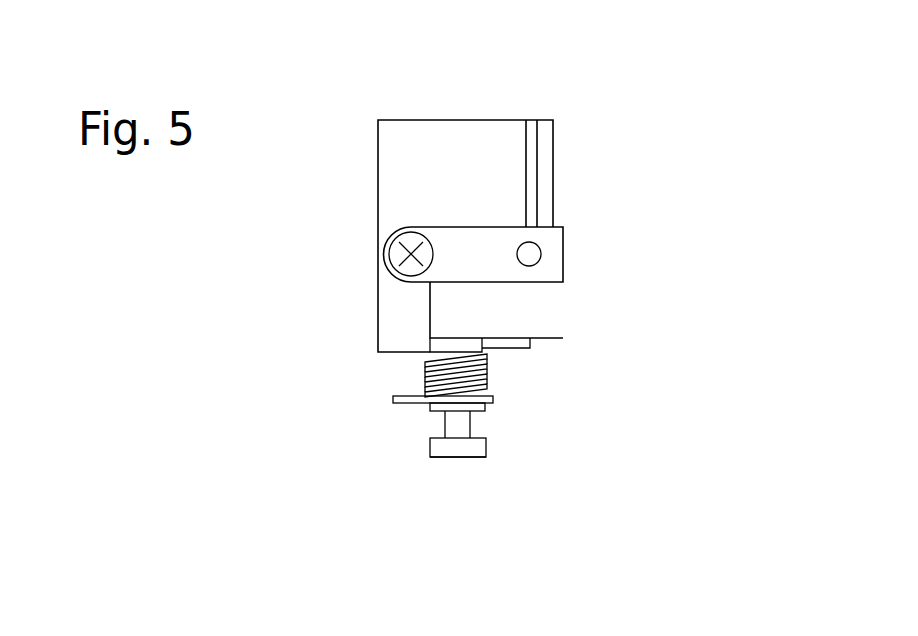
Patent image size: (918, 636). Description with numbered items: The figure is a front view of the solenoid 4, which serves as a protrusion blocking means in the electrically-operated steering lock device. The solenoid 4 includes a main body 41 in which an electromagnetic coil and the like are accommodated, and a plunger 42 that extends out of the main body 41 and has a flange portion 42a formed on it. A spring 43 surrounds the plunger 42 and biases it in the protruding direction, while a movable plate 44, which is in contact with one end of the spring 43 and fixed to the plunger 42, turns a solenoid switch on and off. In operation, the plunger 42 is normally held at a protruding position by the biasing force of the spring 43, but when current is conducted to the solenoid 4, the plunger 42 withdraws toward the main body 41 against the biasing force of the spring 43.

The solenoid 4 is at (573, 228).
The main body 41 is at (456, 193).
The plunger 42 is at (468, 430).
The flange portion 42a is at (445, 450).
The spring 43 is at (485, 372).
The movable plate 44 is at (395, 403).